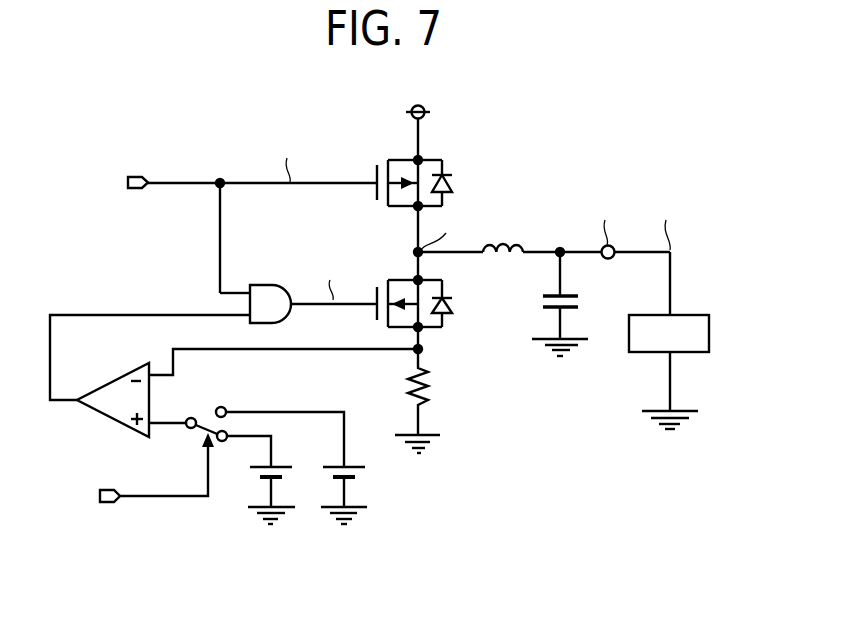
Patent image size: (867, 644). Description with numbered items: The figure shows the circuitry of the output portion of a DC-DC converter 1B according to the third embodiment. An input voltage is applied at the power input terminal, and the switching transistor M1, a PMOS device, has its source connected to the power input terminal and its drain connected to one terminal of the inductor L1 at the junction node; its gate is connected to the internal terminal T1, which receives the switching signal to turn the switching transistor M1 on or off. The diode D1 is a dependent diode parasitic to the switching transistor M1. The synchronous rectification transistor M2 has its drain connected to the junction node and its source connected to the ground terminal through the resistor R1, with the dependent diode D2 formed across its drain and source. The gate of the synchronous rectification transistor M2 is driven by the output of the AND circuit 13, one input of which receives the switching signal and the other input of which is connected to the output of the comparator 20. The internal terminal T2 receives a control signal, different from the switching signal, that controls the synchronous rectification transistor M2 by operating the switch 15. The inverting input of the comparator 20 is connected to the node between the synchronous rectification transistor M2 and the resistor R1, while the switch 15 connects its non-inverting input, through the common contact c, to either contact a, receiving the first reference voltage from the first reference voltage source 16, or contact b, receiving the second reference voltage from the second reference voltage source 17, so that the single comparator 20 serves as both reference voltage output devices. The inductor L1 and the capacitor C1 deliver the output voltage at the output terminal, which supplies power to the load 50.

The DC-DC converter 1B is at (628, 560).
The AND circuit 13 is at (265, 283).
The switch 15 is at (197, 403).
The first reference voltage source 16 is at (363, 474).
The second reference voltage source 17 is at (254, 486).
The comparator 20 is at (98, 390).
The load 50 is at (709, 318).
The internal terminal T1 is at (137, 175).
The internal terminal T2 is at (110, 488).
The switching transistor M1 is at (394, 169).
The synchronous rectification transistor M2 is at (394, 292).
The diode D1 is at (450, 183).
The diode D2 is at (450, 303).
The inductor L1 is at (489, 231).
The capacitor C1 is at (548, 304).
The resistor R1 is at (426, 422).